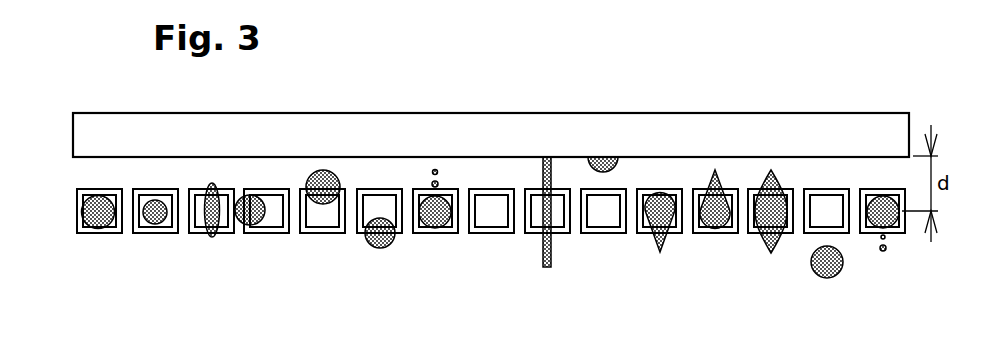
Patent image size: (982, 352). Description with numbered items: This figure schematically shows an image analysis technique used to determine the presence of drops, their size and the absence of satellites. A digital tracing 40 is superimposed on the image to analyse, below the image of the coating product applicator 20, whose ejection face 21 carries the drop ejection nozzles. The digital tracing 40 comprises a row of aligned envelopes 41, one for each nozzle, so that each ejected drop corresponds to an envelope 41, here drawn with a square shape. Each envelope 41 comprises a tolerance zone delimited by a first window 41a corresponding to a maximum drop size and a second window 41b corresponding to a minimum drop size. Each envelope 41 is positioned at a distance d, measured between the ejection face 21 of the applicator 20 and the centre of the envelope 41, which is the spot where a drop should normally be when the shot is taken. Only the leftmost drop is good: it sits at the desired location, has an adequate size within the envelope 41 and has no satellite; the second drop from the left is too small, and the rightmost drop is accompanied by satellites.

The coating product applicator 20 is at (726, 113).
The ejection face 21 is at (88, 166).
The digital tracing 40 is at (470, 239).
The envelope 41 is at (470, 239).
The first window 41a is at (477, 233).
The second window 41b is at (501, 240).